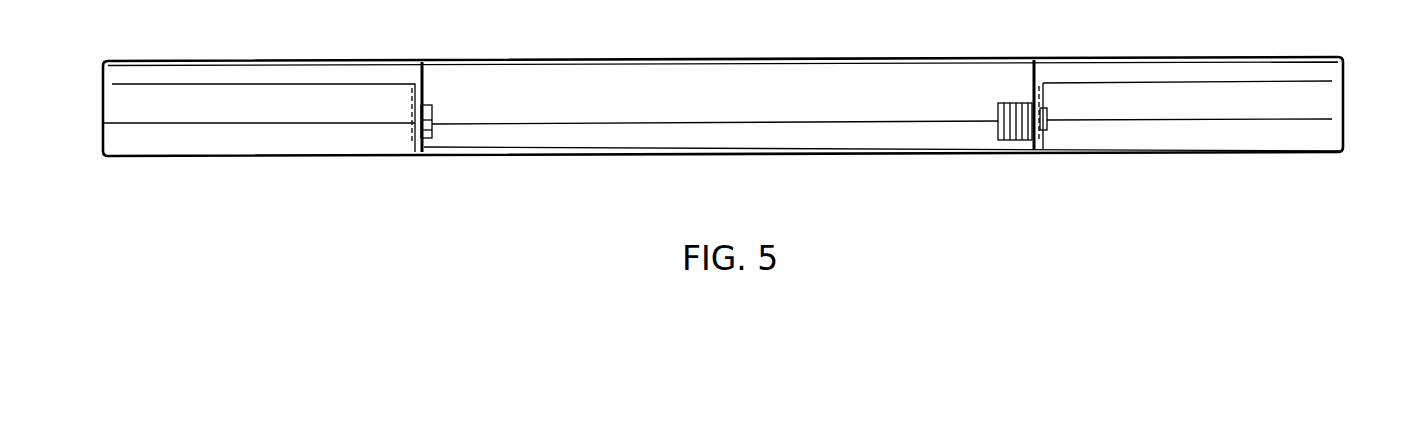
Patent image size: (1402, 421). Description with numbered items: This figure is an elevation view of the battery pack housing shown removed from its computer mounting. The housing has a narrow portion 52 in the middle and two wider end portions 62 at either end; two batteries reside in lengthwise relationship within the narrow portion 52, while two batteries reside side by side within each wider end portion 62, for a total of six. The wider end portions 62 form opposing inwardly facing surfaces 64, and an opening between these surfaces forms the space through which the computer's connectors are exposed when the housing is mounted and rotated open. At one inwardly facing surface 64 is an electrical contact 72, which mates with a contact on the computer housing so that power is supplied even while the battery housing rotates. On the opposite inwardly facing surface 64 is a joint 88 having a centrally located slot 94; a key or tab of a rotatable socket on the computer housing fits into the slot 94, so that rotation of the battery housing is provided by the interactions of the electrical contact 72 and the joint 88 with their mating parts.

The narrow portion 52 is at (828, 155).
The wider end portions 62 is at (203, 146).
The inwardly facing surfaces 64 is at (423, 83).
The electrical contact 72 is at (1003, 139).
The joint 88 is at (433, 132).
The slot 94 is at (433, 118).